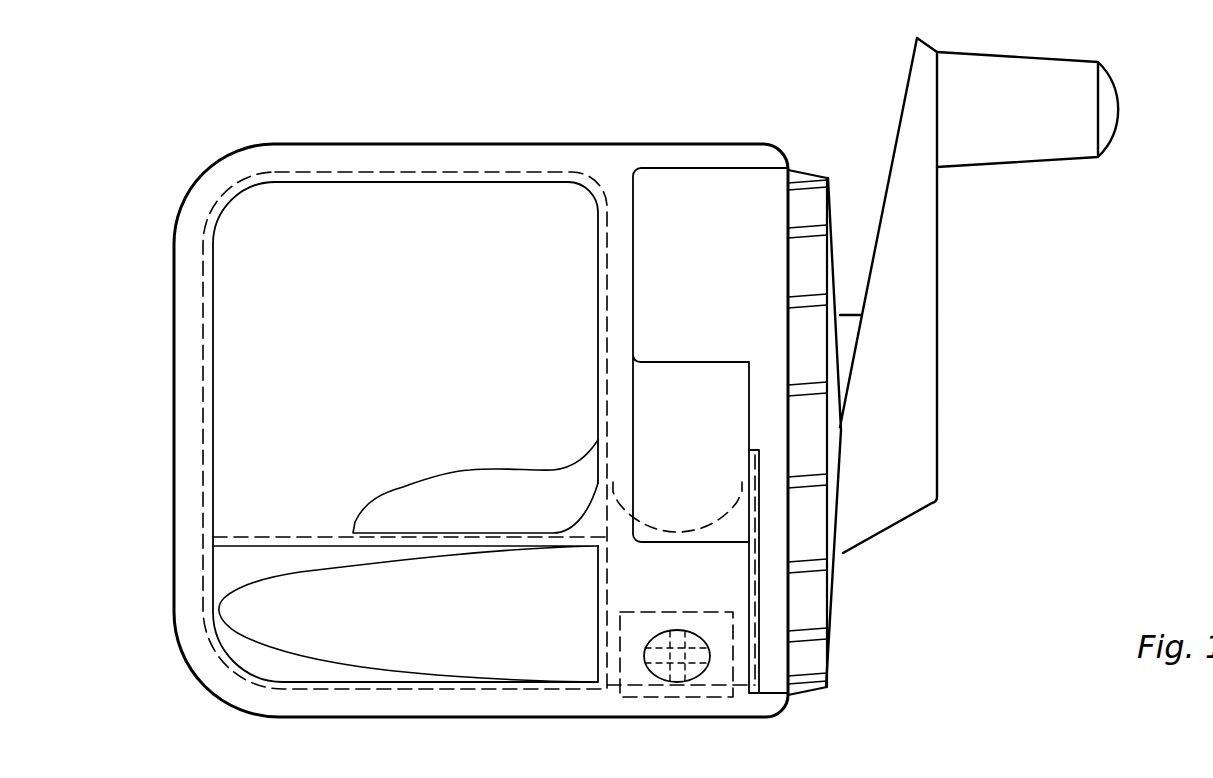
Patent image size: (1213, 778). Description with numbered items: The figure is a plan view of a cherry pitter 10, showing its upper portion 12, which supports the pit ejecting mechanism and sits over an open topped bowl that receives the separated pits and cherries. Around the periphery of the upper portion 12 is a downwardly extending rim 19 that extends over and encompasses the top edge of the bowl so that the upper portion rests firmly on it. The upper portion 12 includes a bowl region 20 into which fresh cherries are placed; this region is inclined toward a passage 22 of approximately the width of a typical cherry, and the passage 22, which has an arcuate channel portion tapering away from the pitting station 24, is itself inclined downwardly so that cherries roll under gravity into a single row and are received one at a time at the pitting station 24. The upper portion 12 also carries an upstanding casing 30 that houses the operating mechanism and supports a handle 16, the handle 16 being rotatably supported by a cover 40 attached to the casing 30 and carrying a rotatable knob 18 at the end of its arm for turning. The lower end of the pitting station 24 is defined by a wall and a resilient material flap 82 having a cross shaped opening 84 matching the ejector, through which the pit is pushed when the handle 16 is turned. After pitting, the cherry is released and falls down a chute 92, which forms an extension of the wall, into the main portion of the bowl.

The cherry pitter 10 is at (312, 127).
The upper portion 12 is at (190, 333).
The handle 16 is at (893, 375).
The rotatable knob 18 is at (1005, 113).
The downwardly extending rim 19 is at (175, 553).
The bowl region 20 is at (408, 347).
The passage 22 is at (370, 685).
The pitting station 24 is at (640, 627).
The upstanding casing 30 is at (705, 248).
The cover 40 is at (816, 657).
The resilient material flap 82 is at (660, 667).
The cross shaped opening 84 is at (683, 667).
The chute 92 is at (710, 525).